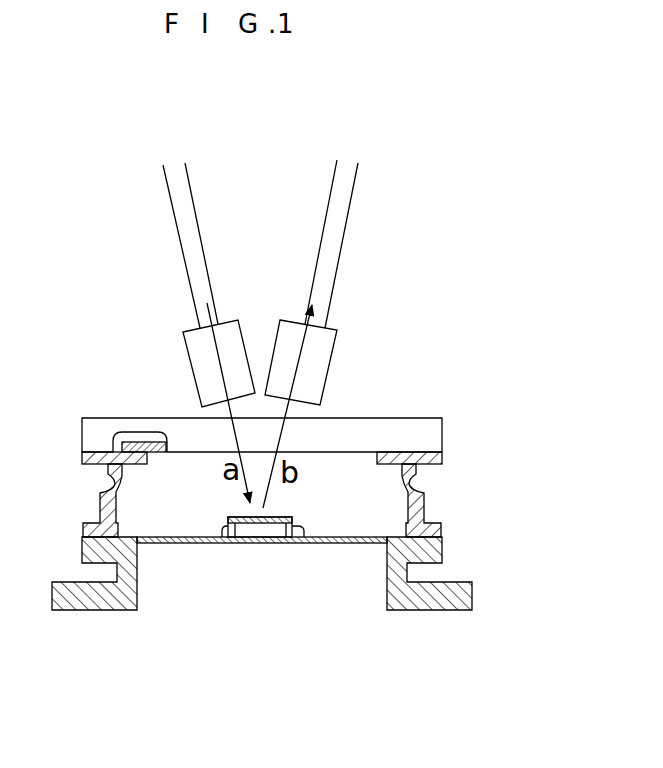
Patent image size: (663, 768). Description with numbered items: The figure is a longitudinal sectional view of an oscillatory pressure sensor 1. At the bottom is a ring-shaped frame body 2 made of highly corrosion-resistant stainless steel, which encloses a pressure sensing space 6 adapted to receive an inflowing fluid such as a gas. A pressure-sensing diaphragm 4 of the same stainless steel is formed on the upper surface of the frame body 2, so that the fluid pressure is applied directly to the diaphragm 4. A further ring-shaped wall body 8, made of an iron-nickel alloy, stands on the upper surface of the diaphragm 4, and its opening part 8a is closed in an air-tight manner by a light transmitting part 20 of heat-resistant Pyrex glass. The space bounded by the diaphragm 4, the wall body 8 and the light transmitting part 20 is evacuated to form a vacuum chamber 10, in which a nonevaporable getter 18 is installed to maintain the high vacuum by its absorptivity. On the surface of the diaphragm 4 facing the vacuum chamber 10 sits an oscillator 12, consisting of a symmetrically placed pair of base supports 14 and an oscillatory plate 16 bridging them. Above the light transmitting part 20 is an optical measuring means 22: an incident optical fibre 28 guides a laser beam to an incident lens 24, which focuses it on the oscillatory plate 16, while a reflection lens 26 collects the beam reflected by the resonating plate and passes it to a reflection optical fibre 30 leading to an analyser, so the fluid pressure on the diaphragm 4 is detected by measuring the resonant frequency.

The oscillatory pressure sensor 1 is at (490, 392).
The frame body 2 is at (388, 592).
The pressure-sensing diaphragm 4 is at (180, 547).
The pressure sensing space 6 is at (268, 595).
The wall body 8 is at (420, 508).
The opening part 8a is at (201, 458).
The vacuum chamber 10 is at (408, 477).
The oscillator 12 is at (208, 512).
The base supports 14 is at (218, 547).
The oscillatory plate 16 is at (258, 547).
The getter 18 is at (138, 447).
The light transmitting part 20 is at (373, 430).
The optical measuring means 22 is at (273, 283).
The incident lens 24 is at (202, 357).
The reflection lens 26 is at (318, 360).
The incident optical fibre 28 is at (195, 208).
The reflection optical fibre 30 is at (350, 193).